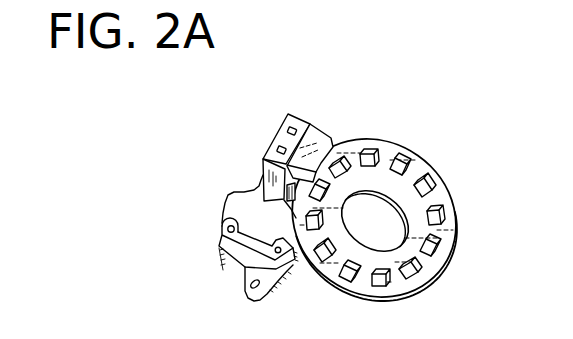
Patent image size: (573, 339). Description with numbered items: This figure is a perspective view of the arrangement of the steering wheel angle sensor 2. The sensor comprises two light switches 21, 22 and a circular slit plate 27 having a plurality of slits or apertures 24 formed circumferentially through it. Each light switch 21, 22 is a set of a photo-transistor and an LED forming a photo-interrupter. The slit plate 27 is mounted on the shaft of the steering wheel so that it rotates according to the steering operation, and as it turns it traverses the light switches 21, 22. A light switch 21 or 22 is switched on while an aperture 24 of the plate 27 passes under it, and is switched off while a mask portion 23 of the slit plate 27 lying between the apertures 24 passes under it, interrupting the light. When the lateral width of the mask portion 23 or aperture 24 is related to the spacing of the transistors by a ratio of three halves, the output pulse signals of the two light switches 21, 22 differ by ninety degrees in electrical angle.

The steering wheel angle sensor 2 is at (234, 225).
The light switch 21 is at (298, 167).
The light switch 22 is at (320, 142).
The mask portion 23 is at (383, 207).
The aperture 24 is at (432, 186).
The slit plate 27 is at (454, 250).